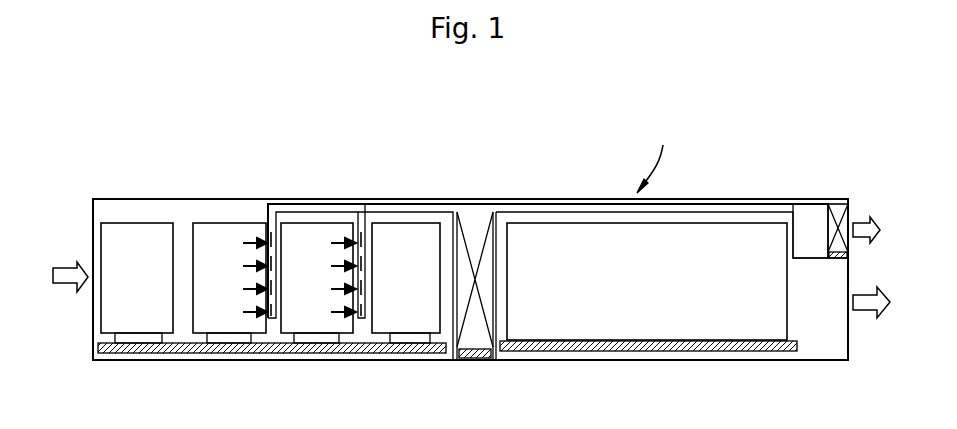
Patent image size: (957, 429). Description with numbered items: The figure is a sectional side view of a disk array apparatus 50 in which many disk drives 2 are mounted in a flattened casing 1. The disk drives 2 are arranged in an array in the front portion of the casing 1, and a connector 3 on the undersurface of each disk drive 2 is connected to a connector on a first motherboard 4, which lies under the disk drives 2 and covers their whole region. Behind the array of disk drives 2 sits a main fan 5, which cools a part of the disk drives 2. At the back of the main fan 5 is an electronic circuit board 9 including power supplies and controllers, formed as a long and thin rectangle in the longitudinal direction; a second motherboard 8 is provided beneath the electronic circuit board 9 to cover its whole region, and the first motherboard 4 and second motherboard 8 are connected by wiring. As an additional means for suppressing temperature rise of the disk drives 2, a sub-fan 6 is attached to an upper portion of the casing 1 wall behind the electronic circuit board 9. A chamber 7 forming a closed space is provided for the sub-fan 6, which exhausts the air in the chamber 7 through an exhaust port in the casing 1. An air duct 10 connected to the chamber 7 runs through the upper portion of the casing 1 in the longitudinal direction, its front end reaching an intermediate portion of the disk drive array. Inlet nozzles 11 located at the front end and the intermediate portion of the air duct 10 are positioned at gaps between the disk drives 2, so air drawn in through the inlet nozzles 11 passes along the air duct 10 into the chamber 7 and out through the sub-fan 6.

The casing 1 is at (227, 197).
The disk drive 2 is at (215, 243).
The connector 3 is at (140, 340).
The first motherboard 4 is at (290, 353).
The main fan 5 is at (487, 233).
The sub-fan 6 is at (835, 205).
The chamber 7 is at (807, 225).
The second motherboard 8 is at (653, 345).
The electronic circuit board 9 is at (663, 273).
The air duct 10 is at (410, 205).
The inlet nozzle 11 is at (360, 302).
The disk array apparatus 50 is at (658, 158).